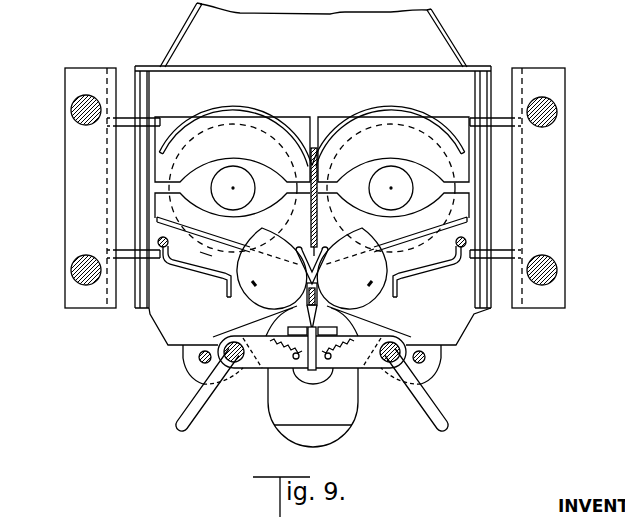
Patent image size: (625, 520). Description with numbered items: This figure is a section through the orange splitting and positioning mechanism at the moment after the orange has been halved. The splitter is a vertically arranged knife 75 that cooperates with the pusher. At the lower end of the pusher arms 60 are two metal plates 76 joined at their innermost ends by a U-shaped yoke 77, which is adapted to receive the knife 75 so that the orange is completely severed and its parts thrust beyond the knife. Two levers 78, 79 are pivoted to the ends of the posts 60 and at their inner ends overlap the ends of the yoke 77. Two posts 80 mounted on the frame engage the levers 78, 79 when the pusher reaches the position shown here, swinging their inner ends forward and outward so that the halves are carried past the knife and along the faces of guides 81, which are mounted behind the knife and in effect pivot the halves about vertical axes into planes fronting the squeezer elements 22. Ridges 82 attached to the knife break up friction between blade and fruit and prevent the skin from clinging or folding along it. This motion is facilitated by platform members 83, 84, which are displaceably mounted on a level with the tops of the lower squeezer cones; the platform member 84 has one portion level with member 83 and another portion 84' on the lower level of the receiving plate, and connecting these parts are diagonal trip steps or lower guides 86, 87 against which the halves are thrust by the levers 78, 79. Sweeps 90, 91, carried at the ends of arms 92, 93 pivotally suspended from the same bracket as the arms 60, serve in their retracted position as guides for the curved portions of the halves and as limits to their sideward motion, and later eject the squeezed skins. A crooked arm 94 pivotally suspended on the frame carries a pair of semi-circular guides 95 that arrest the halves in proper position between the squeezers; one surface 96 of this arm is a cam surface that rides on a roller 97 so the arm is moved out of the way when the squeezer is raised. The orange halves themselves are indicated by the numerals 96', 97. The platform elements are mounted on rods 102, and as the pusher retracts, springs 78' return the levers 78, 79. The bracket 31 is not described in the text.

The squeezer element 22 is at (422, 180).
The side bracket 31 is at (548, 268).
The pusher arm 60 is at (234, 362).
The knife 75 is at (316, 310).
The metal plate 76 is at (262, 355).
The U-shaped yoke 77 is at (300, 378).
The lever 78 is at (189, 390).
The spring 78' is at (295, 322).
The lever 79 is at (424, 398).
The post 80 is at (200, 358).
The guide 81 is at (325, 260).
The ridge 82 is at (316, 250).
The platform member 83 is at (235, 145).
The platform member 84 is at (232, 188).
The platform member portion 84' is at (206, 280).
The trip step 86 is at (211, 234).
The trip step 87 is at (388, 250).
The sweep 90 is at (200, 280).
The sweep 91 is at (418, 279).
The arm 92 is at (455, 246).
The arm 93 is at (163, 250).
The crooked arm 94 is at (315, 147).
The semi-circular guide 95 is at (231, 108).
The cam surface 96 is at (267, 274).
The orange half 96' is at (250, 301).
The orange half 97 is at (354, 290).
The rod 102 is at (124, 252).